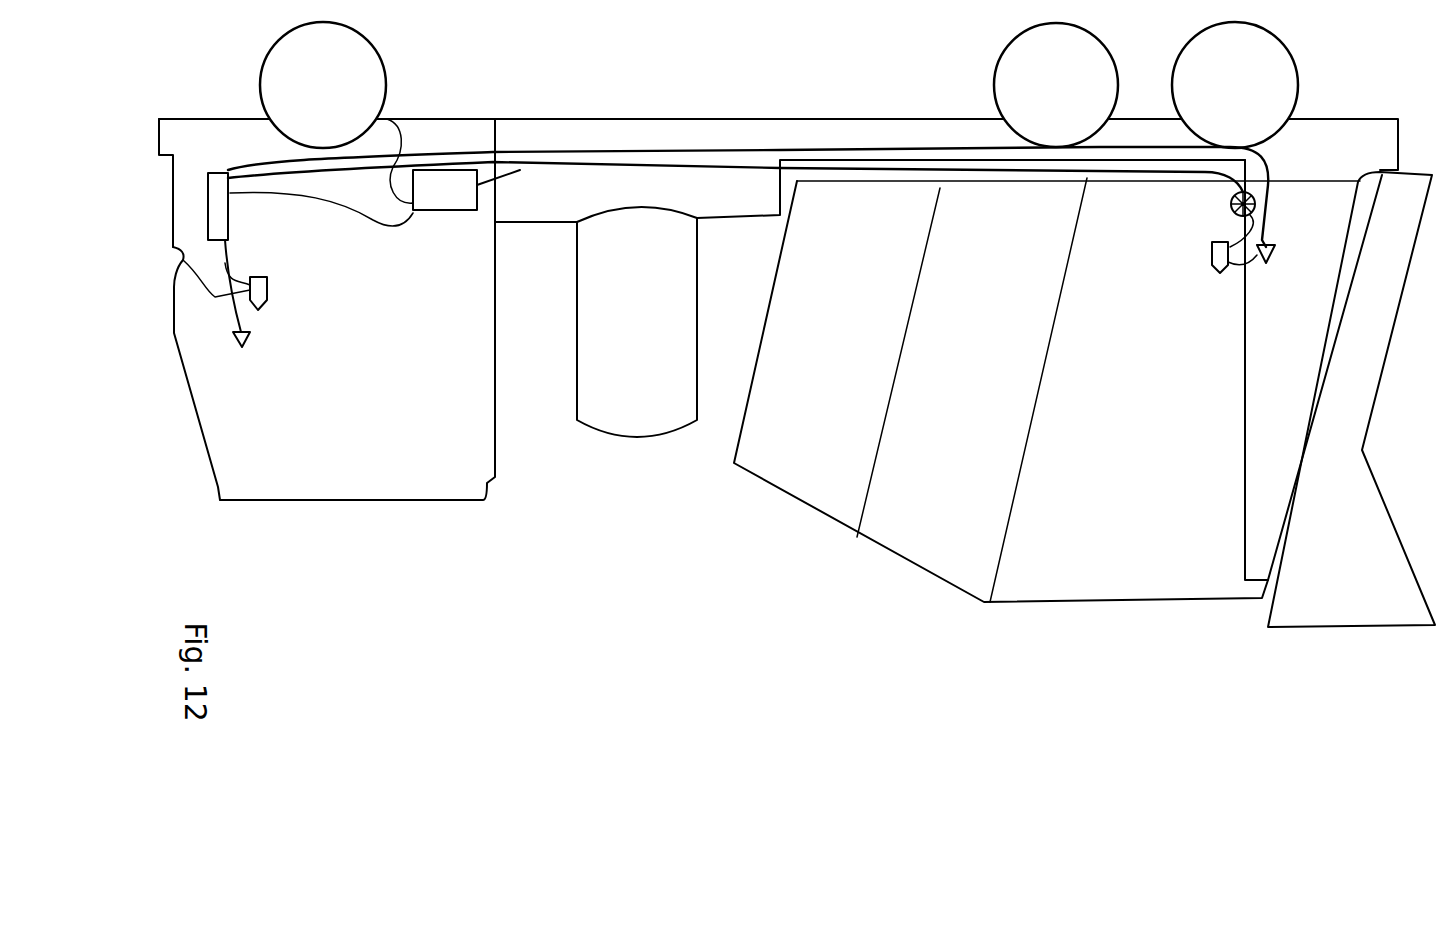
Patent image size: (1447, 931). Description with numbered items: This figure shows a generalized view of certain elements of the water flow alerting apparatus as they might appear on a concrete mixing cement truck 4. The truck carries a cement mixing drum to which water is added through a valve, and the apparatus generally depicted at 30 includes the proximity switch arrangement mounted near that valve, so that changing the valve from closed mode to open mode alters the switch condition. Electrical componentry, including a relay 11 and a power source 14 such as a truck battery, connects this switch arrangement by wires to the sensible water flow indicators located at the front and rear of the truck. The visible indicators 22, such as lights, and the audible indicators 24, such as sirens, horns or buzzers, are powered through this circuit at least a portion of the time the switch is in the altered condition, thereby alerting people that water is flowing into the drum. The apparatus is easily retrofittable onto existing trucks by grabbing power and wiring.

The cement truck 4 is at (553, 632).
The relay 11 is at (208, 173).
The power source 14 is at (450, 217).
The visible indicator 22 is at (237, 345).
The audible indicator 24 is at (260, 305).
The water flow alerting apparatus embodiment 30 is at (1227, 215).